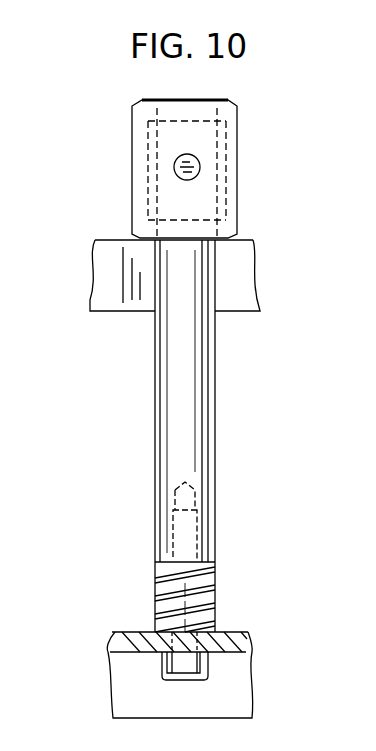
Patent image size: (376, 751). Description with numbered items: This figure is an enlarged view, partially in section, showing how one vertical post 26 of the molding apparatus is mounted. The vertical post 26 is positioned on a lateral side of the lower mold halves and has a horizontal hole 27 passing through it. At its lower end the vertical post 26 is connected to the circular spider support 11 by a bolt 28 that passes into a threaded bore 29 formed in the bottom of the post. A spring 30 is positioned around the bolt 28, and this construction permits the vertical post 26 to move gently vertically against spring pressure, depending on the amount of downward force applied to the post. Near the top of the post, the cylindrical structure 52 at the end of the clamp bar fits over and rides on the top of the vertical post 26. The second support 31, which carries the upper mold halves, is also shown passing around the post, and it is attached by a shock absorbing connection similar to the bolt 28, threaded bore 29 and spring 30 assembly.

The cylindrical structure 52 is at (222, 135).
The horizontal hole 27 is at (187, 180).
The second support 31 is at (112, 297).
The vertical post 26 is at (197, 416).
The threaded bore 29 is at (197, 522).
The spring 30 is at (215, 585).
The spider support 11 is at (123, 670).
The bolt 28 is at (192, 662).